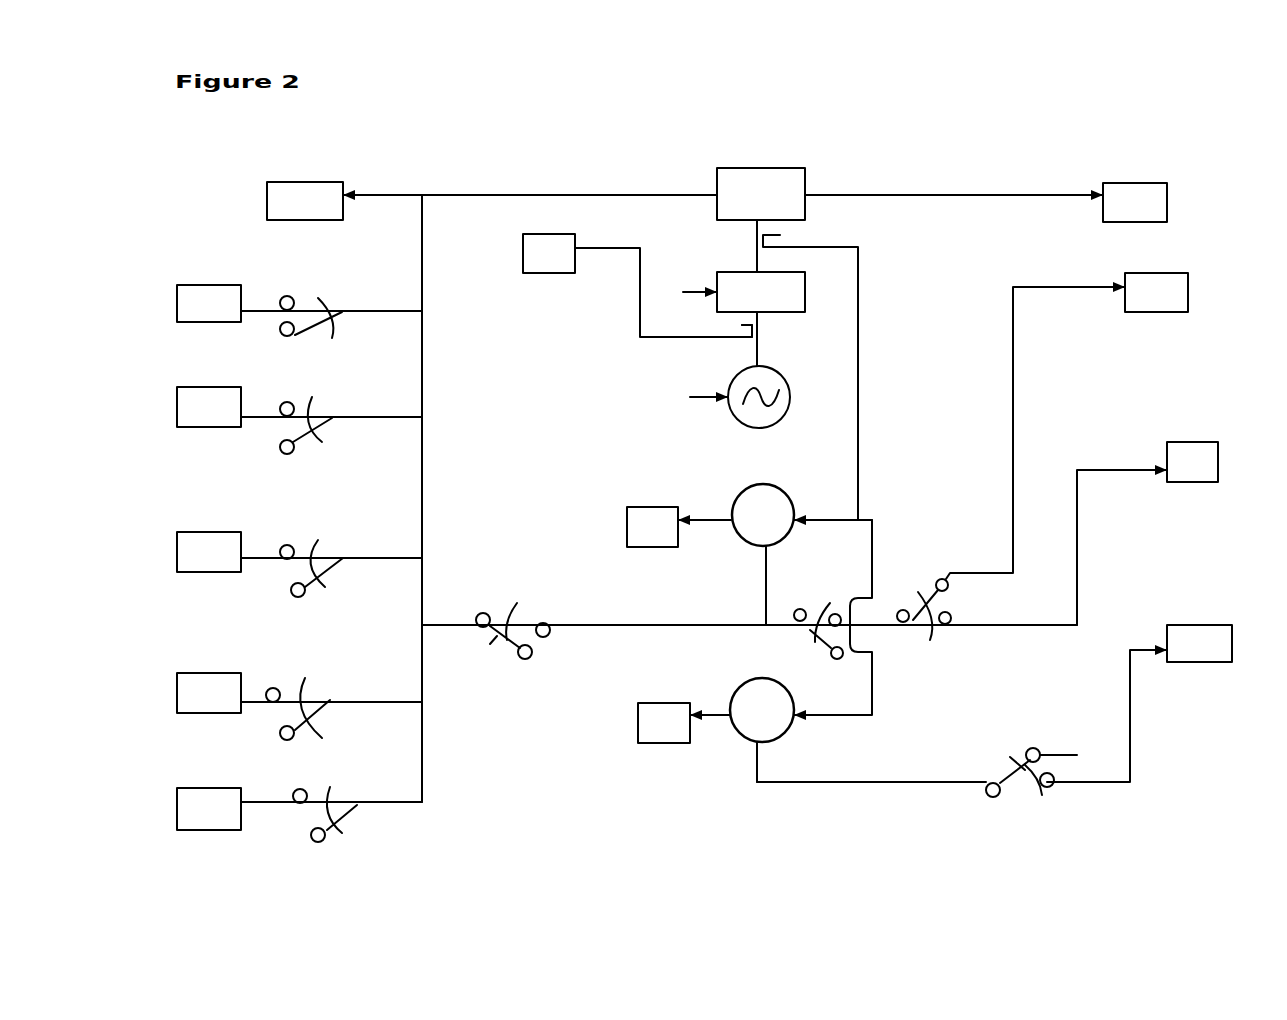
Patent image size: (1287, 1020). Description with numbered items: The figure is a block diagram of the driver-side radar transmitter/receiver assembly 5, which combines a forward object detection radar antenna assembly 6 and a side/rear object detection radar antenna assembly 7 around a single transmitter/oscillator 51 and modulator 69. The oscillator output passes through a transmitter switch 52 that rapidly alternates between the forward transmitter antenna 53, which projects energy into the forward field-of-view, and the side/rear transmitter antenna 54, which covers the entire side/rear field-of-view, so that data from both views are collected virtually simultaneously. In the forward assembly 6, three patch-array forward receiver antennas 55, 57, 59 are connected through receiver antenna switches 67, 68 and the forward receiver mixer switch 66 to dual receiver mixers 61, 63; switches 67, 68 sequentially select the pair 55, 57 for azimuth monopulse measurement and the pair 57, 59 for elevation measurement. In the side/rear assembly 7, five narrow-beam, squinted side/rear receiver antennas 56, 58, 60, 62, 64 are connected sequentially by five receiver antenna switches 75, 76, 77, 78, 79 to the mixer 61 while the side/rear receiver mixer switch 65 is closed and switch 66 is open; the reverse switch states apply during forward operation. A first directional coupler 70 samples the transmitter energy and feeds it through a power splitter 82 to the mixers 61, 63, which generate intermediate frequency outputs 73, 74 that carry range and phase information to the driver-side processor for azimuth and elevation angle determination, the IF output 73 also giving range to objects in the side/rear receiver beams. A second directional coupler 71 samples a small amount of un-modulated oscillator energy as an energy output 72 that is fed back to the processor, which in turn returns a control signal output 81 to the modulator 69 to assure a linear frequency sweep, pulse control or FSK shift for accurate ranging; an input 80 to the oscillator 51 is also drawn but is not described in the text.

The radar transmitter/receiver assembly 5 is at (570, 177).
The driver-side forward object detection radar antenna assembly 6 is at (1177, 362).
The driver-side side/rear object detection radar antenna assembly 7 is at (228, 220).
The transmitter/oscillator 51 is at (780, 384).
The transmitter switch 52 is at (775, 187).
The forward transmitter antenna 53 is at (1140, 197).
The side/rear transmitter antenna 54 is at (327, 192).
The forward receiver antenna 55 is at (1168, 287).
The side/rear receiver antenna 56 is at (237, 297).
The forward receiver antenna 57 is at (1185, 460).
The side/rear receiver antenna 58 is at (223, 400).
The forward receiver antenna 59 is at (1188, 630).
The side/rear receiver antenna 60 is at (220, 543).
The receiver mixer 61 is at (782, 505).
The side/rear receiver antenna 62 is at (227, 690).
The receiver mixer 63 is at (737, 687).
The side/rear receiver antenna 64 is at (228, 803).
The side/rear receiver mixer switch 65 is at (523, 622).
The forward receiver mixer switch 66 is at (817, 617).
The receiver antenna switch 67 is at (945, 625).
The receiver antenna switch 68 is at (1027, 788).
The modulator 69 is at (790, 297).
The first directional coupler 70 is at (790, 244).
The second directional coupler 71 is at (740, 332).
The energy output 72 is at (545, 248).
The intermediate frequency output 73 is at (647, 522).
The intermediate frequency output 74 is at (652, 733).
The receiver antenna switch 75 is at (325, 308).
The receiver antenna switch 76 is at (317, 410).
The receiver antenna switch 77 is at (327, 557).
The receiver antenna switch 78 is at (315, 697).
The receiver antenna switch 79 is at (338, 800).
The oscillator control signal 80 is at (695, 396).
The control signal output 81 is at (688, 291).
The power splitter 82 is at (865, 517).